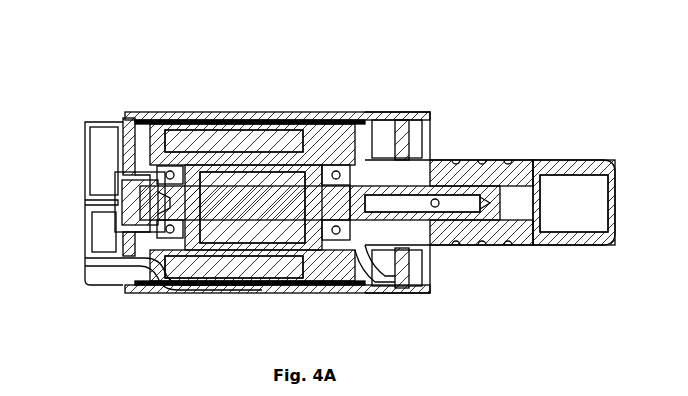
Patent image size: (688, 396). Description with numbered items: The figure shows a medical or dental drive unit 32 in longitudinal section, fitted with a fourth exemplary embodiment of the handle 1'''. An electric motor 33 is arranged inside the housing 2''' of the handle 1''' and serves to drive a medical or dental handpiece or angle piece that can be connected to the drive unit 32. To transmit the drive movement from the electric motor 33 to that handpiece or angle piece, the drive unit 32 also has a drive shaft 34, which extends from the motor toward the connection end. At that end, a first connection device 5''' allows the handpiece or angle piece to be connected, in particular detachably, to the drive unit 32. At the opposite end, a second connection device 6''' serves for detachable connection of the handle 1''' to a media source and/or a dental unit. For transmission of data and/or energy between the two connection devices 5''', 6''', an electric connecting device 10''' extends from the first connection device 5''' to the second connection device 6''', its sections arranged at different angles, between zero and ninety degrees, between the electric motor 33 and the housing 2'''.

The handle 1''' is at (257, 171).
The housing 2''' is at (277, 305).
The first connection device 5''' is at (522, 234).
The second connection device 6''' is at (83, 190).
The electric connecting device 10''' is at (392, 173).
The medical or dental drive unit 32 is at (520, 88).
The electric motor 33 is at (232, 188).
The drive shaft 34 is at (455, 205).